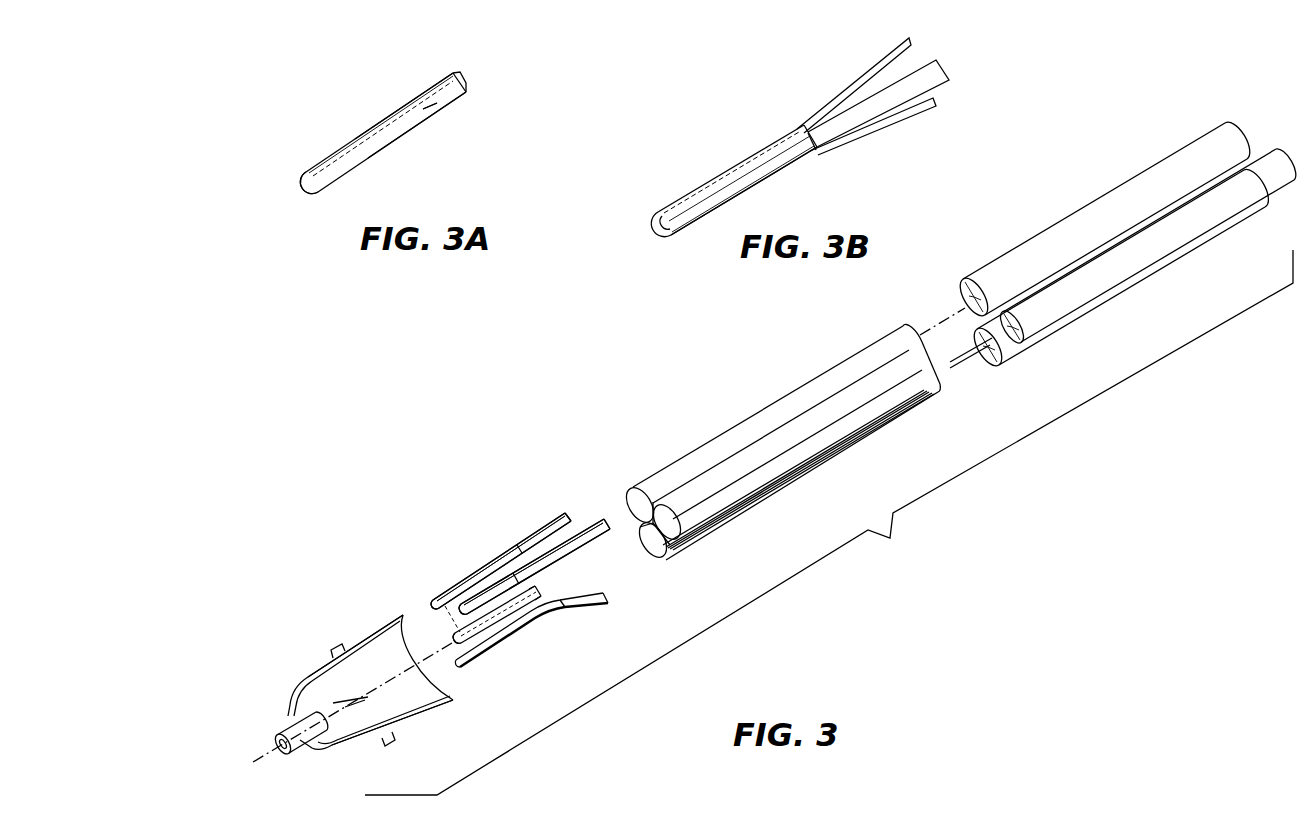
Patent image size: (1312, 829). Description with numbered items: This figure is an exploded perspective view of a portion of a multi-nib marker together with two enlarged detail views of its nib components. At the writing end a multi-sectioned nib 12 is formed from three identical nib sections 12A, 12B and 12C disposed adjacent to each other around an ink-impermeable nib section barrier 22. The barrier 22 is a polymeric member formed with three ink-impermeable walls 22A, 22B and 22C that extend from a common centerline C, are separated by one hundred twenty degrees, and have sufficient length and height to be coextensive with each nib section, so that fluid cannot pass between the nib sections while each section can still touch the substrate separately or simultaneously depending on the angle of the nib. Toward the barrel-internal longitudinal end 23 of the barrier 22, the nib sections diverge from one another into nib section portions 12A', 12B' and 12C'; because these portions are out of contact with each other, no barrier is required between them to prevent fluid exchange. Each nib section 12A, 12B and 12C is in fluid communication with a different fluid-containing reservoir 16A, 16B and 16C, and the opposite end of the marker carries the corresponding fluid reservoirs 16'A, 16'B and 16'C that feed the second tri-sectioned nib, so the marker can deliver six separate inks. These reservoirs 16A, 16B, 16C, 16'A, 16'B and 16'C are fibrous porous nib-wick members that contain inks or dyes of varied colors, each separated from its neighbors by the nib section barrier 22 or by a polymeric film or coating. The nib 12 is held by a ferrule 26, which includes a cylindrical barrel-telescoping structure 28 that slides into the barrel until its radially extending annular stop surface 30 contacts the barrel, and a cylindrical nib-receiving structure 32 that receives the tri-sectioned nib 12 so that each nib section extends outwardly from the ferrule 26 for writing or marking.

In FIG. 3B, the multi-sectioned nib 12 is at (715, 113).
In FIG. 3, the multi-sectioned nib 12 is at (442, 502).
In FIG. 3B, the nib section 12A is at (739, 178).
In FIG. 3, the nib section 12A is at (532, 566).
In FIG. 3B, the nib section 12B is at (713, 181).
In FIG. 3, the nib section 12B is at (476, 561).
In FIG. 3B, the nib section 12C is at (744, 210).
In FIG. 3, the nib section 12C is at (531, 647).
In FIG. 3B, the nib section portion 12A' is at (886, 86).
In FIG. 3, the nib section portion 12A' is at (564, 532).
In FIG. 3B, the nib section portion 12B' is at (854, 78).
In FIG. 3, the nib section portion 12B' is at (535, 507).
In FIG. 3B, the nib section portion 12C' is at (873, 136).
In FIG. 3, the nib section portion 12C' is at (590, 628).
In FIG. 3, the fluid-containing reservoir 16A is at (722, 477).
In FIG. 3, the fluid-containing reservoir 16B is at (660, 470).
In FIG. 3, the fluid-containing reservoir 16C is at (712, 545).
In FIG. 3, the fluid reservoir 16'A is at (1146, 248).
In FIG. 3, the fluid reservoir 16'B is at (1099, 221).
In FIG. 3, the fluid reservoir 16'C is at (1119, 290).
In FIG. 3A, the nib section barrier 22 is at (302, 148).
In FIG. 3B, the nib section barrier 22 is at (658, 225).
In FIG. 3, the nib section barrier 22 is at (455, 633).
In FIG. 3A, the ink-impermeable wall 22A is at (360, 130).
In FIG. 3, the ink-impermeable wall 22A is at (540, 594).
In FIG. 3A, the ink-impermeable wall 22B is at (373, 142).
In FIG. 3, the ink-impermeable wall 22B is at (545, 599).
In FIG. 3A, the ink-impermeable wall 22C is at (297, 182).
In FIG. 3, the ink-impermeable wall 22C is at (453, 641).
In FIG. 3A, the barrel-internal longitudinal end 23 is at (460, 83).
In FIG. 3A, the common centerline C is at (437, 105).
In FIG. 3, the ferrule 26 is at (296, 670).
In FIG. 3, the cylindrical barrel-telescoping structure 28 is at (378, 628).
In FIG. 3, the annular stop surface 30 is at (343, 650).
In FIG. 3, the cylindrical nib-receiving structure 32 is at (298, 758).